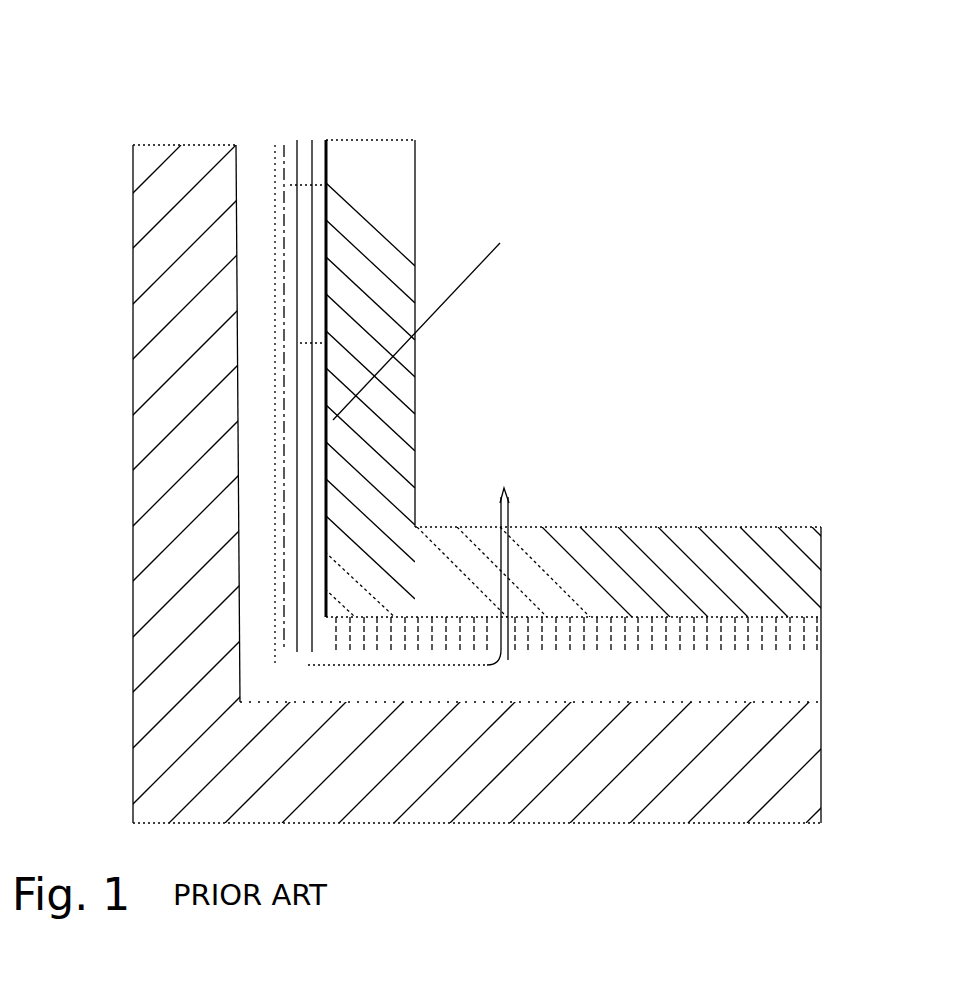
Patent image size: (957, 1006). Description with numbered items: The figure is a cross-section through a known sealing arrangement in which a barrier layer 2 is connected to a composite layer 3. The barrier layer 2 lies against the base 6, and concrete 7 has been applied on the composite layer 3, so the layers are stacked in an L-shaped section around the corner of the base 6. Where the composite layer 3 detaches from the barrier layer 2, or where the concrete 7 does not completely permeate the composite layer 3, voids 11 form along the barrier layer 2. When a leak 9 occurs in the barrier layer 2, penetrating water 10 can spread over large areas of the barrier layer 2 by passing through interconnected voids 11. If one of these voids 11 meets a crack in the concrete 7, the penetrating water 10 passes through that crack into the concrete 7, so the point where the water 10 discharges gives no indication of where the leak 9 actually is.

The barrier layer 2 is at (252, 162).
The composite layer 3 is at (297, 143).
The base 6 is at (178, 167).
The concrete 7 is at (362, 140).
The leak 9 is at (278, 278).
The penetrating water 10 is at (280, 285).
The voids 11 is at (337, 236).